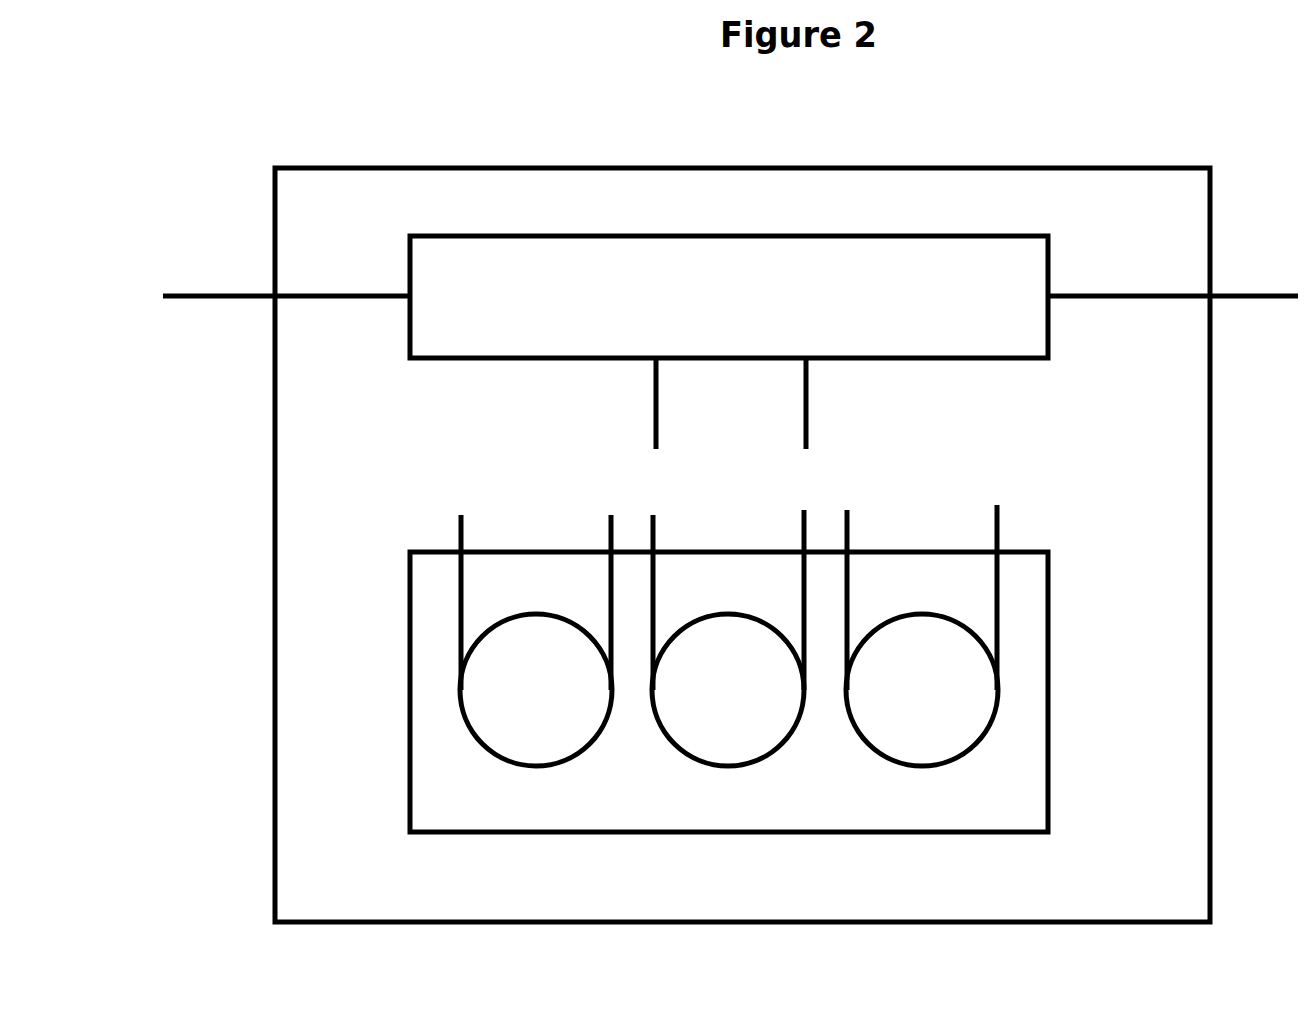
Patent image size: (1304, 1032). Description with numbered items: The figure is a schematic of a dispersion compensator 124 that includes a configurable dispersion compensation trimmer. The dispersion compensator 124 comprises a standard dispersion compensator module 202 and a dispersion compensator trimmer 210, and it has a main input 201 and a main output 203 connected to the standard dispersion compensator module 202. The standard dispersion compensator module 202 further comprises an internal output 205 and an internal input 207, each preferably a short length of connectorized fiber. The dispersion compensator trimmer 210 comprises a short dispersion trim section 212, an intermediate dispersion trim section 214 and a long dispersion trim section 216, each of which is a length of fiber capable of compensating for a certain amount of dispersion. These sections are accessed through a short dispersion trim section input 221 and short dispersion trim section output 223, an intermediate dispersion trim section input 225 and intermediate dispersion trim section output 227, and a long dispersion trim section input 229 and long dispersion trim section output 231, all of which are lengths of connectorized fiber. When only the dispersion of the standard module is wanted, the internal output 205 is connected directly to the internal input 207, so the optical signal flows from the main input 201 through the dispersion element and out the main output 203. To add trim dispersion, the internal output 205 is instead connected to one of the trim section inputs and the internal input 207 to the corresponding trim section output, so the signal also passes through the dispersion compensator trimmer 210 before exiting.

The dispersion compensator 124 is at (742, 545).
The main input 201 is at (286, 318).
The standard dispersion compensator module 202 is at (729, 297).
The main output 203 is at (1173, 315).
The internal output 205 is at (622, 403).
The internal input 207 is at (841, 403).
The dispersion compensator trimmer 210 is at (729, 692).
The short dispersion trim section 212 is at (536, 690).
The intermediate dispersion trim section 214 is at (728, 690).
The long dispersion trim section 216 is at (922, 690).
The short dispersion trim section input 221 is at (490, 590).
The short dispersion trim section output 223 is at (587, 590).
The intermediate dispersion trim section input 225 is at (681, 590).
The intermediate dispersion trim section output 227 is at (786, 588).
The long dispersion trim section input 229 is at (872, 588).
The long dispersion trim section output 231 is at (971, 588).